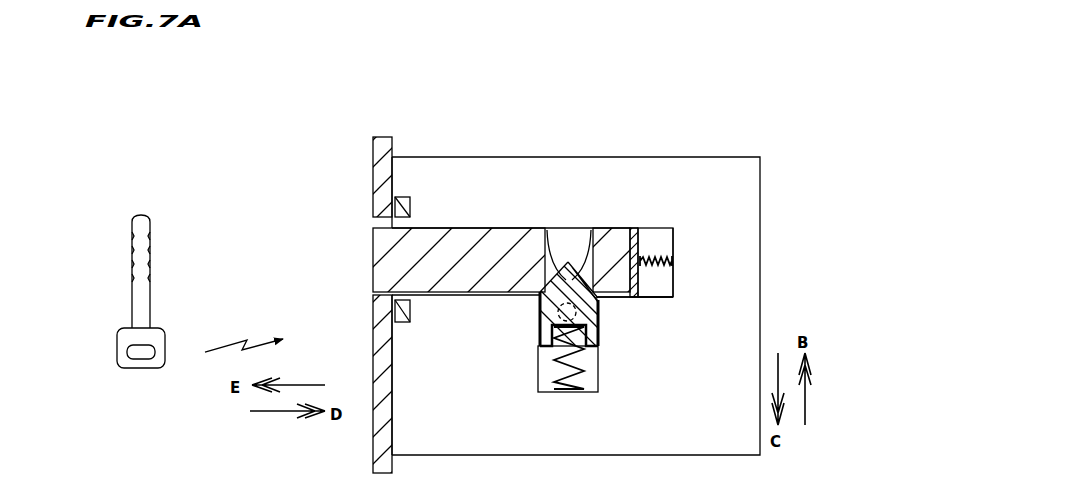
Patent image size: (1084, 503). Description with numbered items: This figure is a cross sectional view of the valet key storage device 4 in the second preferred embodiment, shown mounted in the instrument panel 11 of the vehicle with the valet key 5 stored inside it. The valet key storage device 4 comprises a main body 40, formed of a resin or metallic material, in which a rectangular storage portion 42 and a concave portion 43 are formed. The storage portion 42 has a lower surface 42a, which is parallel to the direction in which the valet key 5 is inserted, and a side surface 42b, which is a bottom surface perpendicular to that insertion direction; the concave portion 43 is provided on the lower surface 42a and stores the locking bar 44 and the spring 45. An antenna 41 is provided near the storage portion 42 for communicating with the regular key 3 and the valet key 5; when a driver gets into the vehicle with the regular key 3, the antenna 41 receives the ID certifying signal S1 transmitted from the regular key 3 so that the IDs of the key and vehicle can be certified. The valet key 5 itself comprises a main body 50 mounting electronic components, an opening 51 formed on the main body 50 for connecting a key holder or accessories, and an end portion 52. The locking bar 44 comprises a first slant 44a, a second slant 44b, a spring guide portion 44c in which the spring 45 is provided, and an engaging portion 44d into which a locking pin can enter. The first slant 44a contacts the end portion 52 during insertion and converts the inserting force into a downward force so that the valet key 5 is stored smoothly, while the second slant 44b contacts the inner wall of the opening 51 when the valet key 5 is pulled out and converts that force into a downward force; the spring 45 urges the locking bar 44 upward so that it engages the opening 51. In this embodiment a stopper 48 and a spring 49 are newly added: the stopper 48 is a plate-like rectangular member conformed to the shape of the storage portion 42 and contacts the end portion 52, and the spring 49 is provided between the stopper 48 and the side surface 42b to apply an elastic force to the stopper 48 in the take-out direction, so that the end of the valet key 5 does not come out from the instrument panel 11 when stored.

The regular key 3 is at (120, 362).
The valet key storage device 4 is at (660, 146).
The valet key 5 is at (420, 260).
The instrument panel 11 is at (373, 160).
The main body 40 is at (748, 169).
The antenna 41 is at (401, 197).
The storage portion 42 is at (433, 218).
The lower surface 42a is at (665, 296).
The side surface 42b is at (673, 272).
The concave portion 43 is at (600, 380).
The locking bar 44 is at (592, 301).
The first slant 44a is at (557, 270).
The second slant 44b is at (594, 278).
The spring guide portion 44c is at (538, 350).
The engaging portion 44d is at (580, 313).
The spring 45 is at (590, 351).
The stopper 48 is at (640, 238).
The spring 49 is at (672, 260).
The main body 50 is at (385, 288).
The opening 51 is at (541, 228).
The end portion 52 is at (633, 227).
The ID certifying signal S1 is at (264, 323).